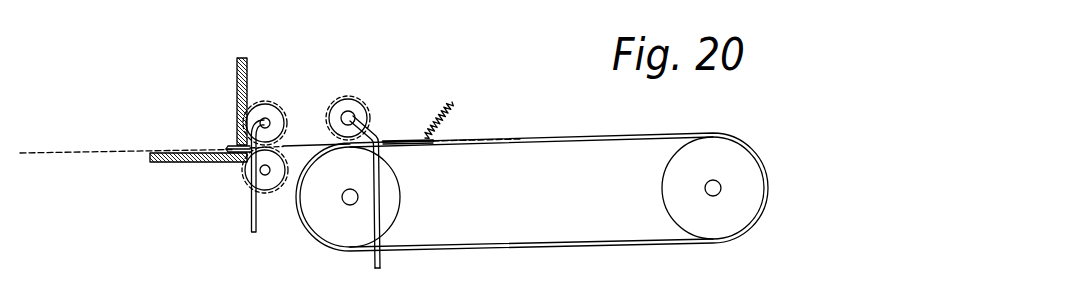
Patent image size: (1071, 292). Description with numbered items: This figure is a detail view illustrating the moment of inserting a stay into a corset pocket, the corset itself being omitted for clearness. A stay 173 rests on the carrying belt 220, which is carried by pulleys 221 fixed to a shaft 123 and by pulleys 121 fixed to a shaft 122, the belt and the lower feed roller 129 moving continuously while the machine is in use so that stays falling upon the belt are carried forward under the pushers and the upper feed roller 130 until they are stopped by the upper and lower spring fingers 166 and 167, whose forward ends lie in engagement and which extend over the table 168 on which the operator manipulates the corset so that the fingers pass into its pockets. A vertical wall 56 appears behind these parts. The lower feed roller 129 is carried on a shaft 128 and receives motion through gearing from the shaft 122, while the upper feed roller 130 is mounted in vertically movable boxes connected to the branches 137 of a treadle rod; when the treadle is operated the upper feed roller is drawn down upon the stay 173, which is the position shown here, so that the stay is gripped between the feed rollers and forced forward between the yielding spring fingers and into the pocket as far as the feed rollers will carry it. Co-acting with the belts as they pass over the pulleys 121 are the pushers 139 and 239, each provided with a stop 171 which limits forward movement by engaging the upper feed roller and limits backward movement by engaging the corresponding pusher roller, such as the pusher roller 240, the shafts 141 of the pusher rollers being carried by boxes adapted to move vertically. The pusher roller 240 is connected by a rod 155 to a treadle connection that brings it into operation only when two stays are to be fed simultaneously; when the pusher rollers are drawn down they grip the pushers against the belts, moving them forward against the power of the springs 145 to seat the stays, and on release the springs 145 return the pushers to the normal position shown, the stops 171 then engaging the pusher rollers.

The vertical wall 56 is at (237, 65).
The table 168 is at (167, 153).
The upper spring finger 166 is at (230, 146).
The lower spring finger 167 is at (230, 163).
The stay 173 is at (52, 151).
The upper feed roller 130 is at (270, 103).
The shaft 128 is at (263, 172).
The lower feed roller 129 is at (267, 185).
The branches 137 is at (252, 220).
The pusher roller 240 is at (347, 104).
The shafts 141 is at (352, 115).
The rod 155 is at (383, 266).
The stop 171 is at (333, 141).
The pusher 239 is at (405, 140).
The pusher 139 is at (391, 137).
The springs 145 is at (453, 108).
The carrying belt 220 is at (628, 126).
The pulleys 121 is at (337, 238).
The shaft 122 is at (345, 203).
The pulleys 221 is at (717, 230).
The shaft 123 is at (713, 196).